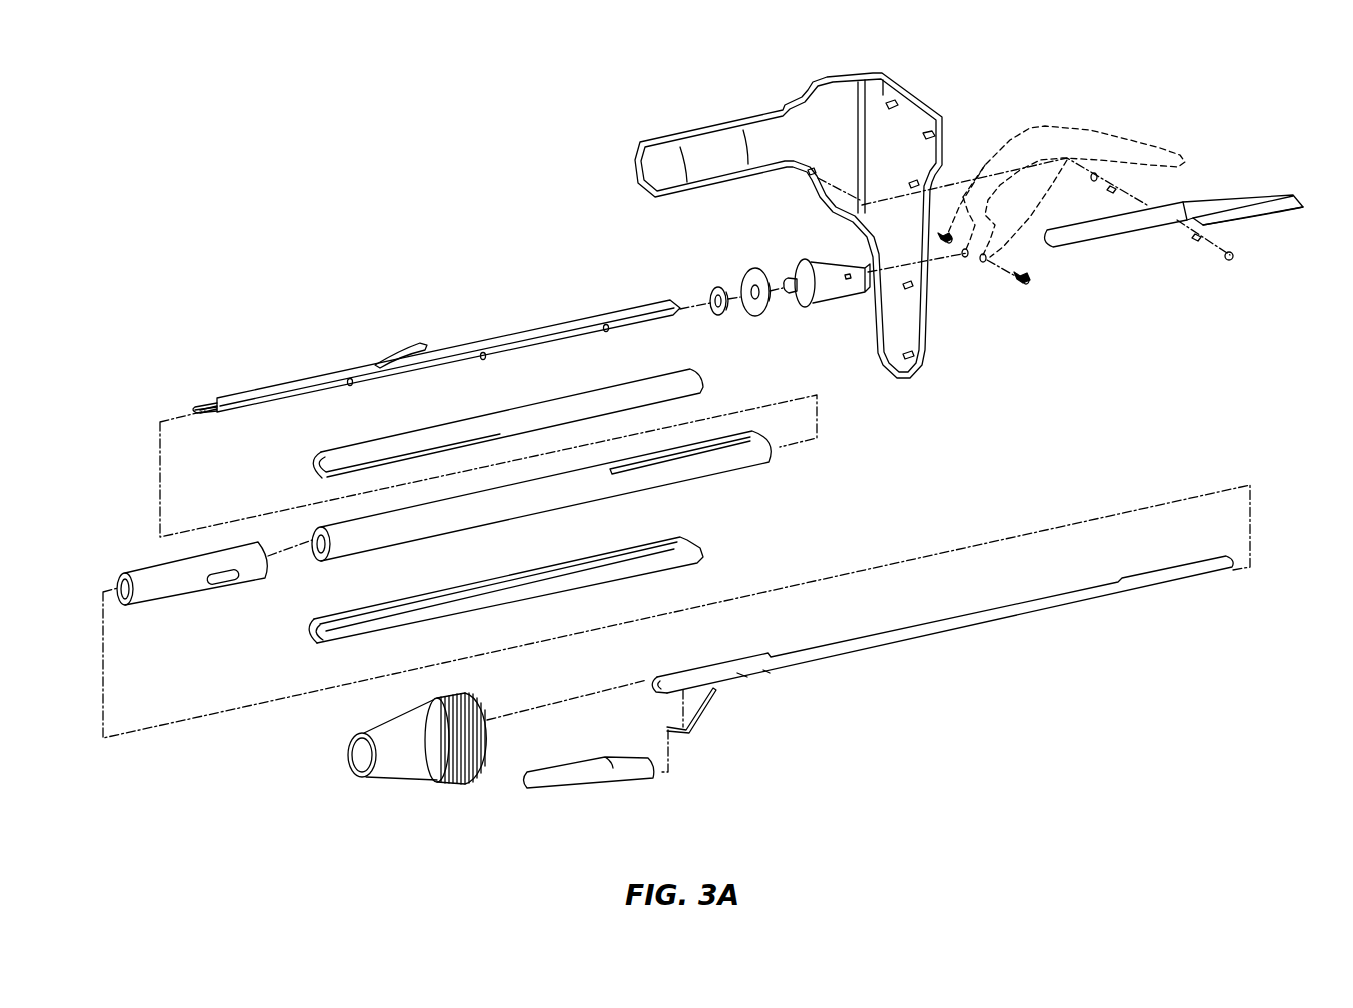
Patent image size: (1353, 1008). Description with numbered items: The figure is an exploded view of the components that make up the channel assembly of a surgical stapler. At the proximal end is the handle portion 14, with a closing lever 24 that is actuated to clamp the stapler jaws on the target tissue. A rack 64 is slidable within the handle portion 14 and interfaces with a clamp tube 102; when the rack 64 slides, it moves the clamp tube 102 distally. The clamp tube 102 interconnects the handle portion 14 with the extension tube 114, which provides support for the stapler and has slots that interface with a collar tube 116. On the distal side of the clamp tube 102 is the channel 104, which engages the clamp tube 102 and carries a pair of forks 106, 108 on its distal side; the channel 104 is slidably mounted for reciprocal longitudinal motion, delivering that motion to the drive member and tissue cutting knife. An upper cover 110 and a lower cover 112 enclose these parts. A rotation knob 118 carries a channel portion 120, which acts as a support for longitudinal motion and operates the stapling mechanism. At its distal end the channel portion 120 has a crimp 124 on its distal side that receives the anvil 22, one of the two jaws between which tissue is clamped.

The handle portion 14 is at (916, 94).
The closing lever 24 is at (1090, 130).
The rack 64 is at (1210, 205).
The clamp tube 102 is at (828, 292).
The channel 104 is at (317, 380).
The fork 106 is at (205, 408).
The fork 108 is at (205, 416).
The upper cover 110 is at (500, 410).
The lower cover 112 is at (673, 537).
The extension tube 114 is at (530, 505).
The collar tube 116 is at (185, 595).
The rotation knob 118 is at (463, 690).
The channel portion 120 is at (930, 620).
The crimp 124 is at (737, 677).
The anvil 22 is at (583, 783).